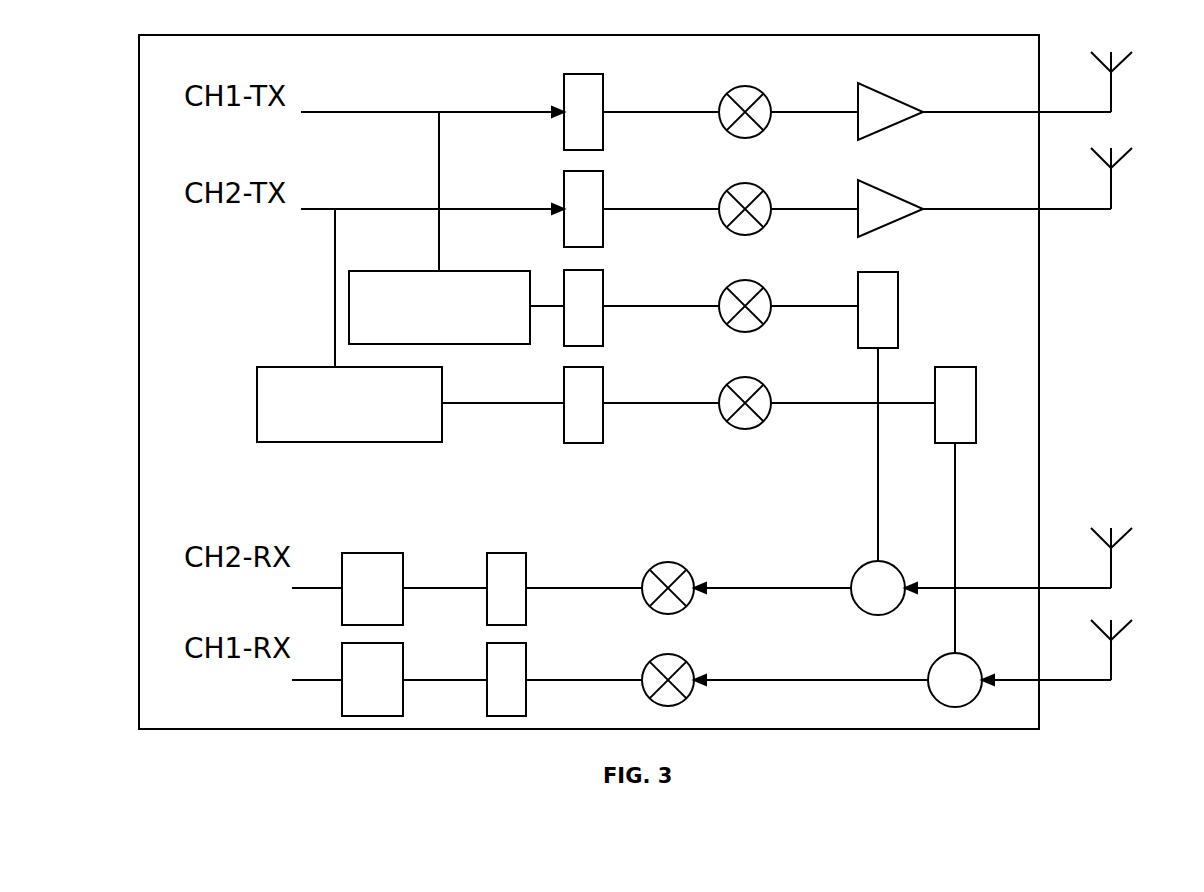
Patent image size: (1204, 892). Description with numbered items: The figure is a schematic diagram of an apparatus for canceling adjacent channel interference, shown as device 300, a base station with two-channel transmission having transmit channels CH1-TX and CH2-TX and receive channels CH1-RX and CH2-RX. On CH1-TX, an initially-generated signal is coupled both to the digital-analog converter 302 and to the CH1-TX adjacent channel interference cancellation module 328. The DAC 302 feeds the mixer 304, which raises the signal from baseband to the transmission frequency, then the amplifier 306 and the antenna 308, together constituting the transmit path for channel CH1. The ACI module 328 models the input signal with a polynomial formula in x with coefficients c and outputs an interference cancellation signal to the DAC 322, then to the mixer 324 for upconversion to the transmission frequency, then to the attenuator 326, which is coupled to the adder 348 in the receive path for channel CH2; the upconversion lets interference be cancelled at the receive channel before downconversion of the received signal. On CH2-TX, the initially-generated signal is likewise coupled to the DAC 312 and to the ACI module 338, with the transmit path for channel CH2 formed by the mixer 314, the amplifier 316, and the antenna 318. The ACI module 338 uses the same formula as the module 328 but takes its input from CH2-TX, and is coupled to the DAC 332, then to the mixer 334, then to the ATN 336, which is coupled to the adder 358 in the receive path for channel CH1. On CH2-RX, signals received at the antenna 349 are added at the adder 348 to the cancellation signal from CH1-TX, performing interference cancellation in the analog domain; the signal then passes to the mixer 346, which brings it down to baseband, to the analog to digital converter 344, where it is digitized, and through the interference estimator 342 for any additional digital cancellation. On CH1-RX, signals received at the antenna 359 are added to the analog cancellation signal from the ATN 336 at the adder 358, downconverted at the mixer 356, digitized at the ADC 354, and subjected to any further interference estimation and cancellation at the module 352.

The device 300 is at (1066, 392).
The digital-analog converter 302 is at (618, 105).
The mixer 304 is at (773, 105).
The amplifier 306 is at (902, 105).
The antenna 308 is at (1116, 106).
The digital-analog converter 312 is at (618, 198).
The mixer 314 is at (773, 198).
The amplifier 316 is at (902, 198).
The antenna 318 is at (1116, 203).
The digital-analog converter 322 is at (618, 293).
The mixer 324 is at (773, 293).
The attenuator 326 is at (908, 293).
The adjacent channel interference cancellation module 328 is at (408, 270).
The digital-analog converter 332 is at (618, 393).
The mixer 334 is at (773, 393).
The attenuator 336 is at (980, 399).
The adjacent channel interference cancellation module 338 is at (255, 400).
The interference estimator 342 is at (407, 577).
The analog to digital converter 344 is at (537, 577).
The mixer 346 is at (713, 583).
The adder 348 is at (895, 562).
The antenna 349 is at (1115, 572).
The interference estimator 352 is at (407, 667).
The analog to digital converter 354 is at (537, 667).
The mixer 356 is at (713, 667).
The adder 358 is at (977, 655).
The antenna 359 is at (1115, 664).